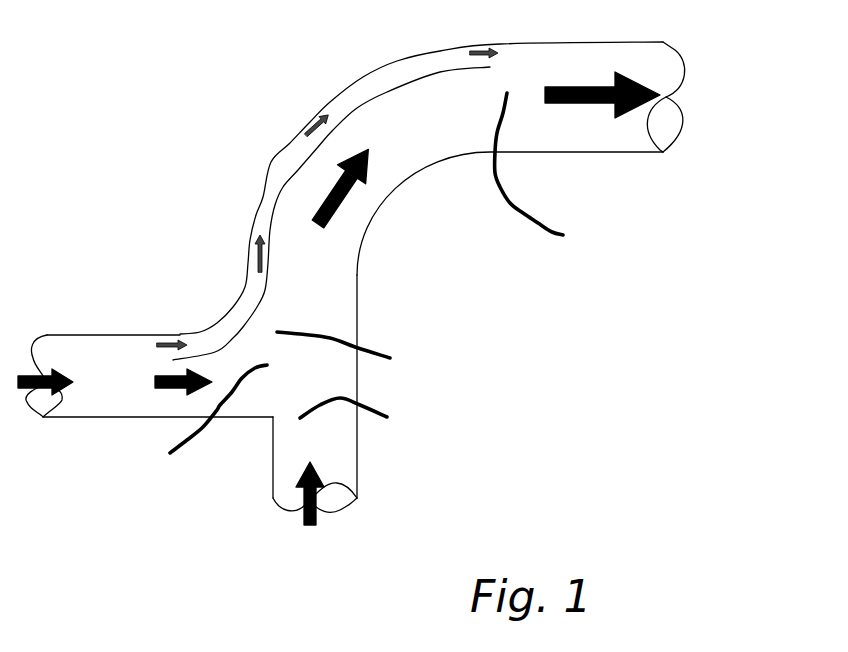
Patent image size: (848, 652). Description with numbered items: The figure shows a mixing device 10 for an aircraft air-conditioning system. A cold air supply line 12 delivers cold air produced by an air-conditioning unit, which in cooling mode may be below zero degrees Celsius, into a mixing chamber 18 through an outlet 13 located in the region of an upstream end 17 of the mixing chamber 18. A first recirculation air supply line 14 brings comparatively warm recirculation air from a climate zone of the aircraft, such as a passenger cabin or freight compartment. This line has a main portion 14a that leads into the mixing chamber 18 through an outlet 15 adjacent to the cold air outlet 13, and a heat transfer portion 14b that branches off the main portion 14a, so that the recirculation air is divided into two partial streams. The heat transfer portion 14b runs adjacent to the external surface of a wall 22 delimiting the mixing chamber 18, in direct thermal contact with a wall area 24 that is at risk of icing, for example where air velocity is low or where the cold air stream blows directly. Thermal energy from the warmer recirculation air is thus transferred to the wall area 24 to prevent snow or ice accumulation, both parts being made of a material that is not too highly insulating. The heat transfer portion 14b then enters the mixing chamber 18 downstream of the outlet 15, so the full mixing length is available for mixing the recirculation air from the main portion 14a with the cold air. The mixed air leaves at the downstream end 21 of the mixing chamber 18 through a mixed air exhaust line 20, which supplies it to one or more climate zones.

The mixing device 10 is at (413, 280).
The cold air supply line 12 is at (350, 468).
The outlet of the cold air supply line 13 is at (369, 420).
The first recirculation air supply line 14 is at (100, 405).
The main portion 14a is at (238, 404).
The heat transfer portion 14b is at (362, 90).
The outlet of the main portion 15 is at (205, 431).
The upstream end of the mixing chamber 17 is at (358, 354).
The mixing chamber 18 is at (346, 256).
The mixed air exhaust line 20 is at (665, 57).
The downstream end of the mixing chamber 21 is at (550, 175).
The mixing chamber wall 22 is at (400, 180).
The mixing chamber wall area at risk of icing 24 is at (331, 128).